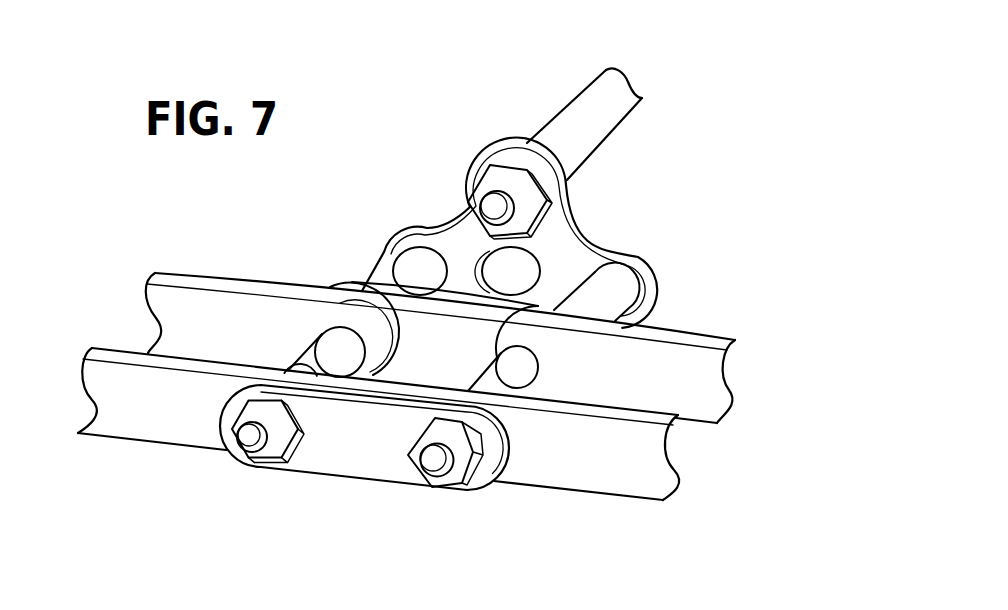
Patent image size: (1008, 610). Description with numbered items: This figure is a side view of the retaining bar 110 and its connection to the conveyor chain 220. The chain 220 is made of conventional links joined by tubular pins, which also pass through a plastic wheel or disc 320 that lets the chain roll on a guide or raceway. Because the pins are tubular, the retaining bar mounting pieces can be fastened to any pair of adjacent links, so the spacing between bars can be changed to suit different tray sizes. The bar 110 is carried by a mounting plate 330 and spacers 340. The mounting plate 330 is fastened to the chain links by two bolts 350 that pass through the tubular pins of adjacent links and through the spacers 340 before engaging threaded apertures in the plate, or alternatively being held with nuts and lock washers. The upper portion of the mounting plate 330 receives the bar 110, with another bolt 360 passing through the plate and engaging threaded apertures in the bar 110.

The bar 110 is at (588, 117).
The chain 220 is at (183, 470).
The plastic wheel or disc 320 is at (260, 400).
The mounting plate 330 is at (562, 215).
The spacers 340 is at (333, 343).
The bolts 350 is at (247, 452).
The bolt 360 is at (490, 190).